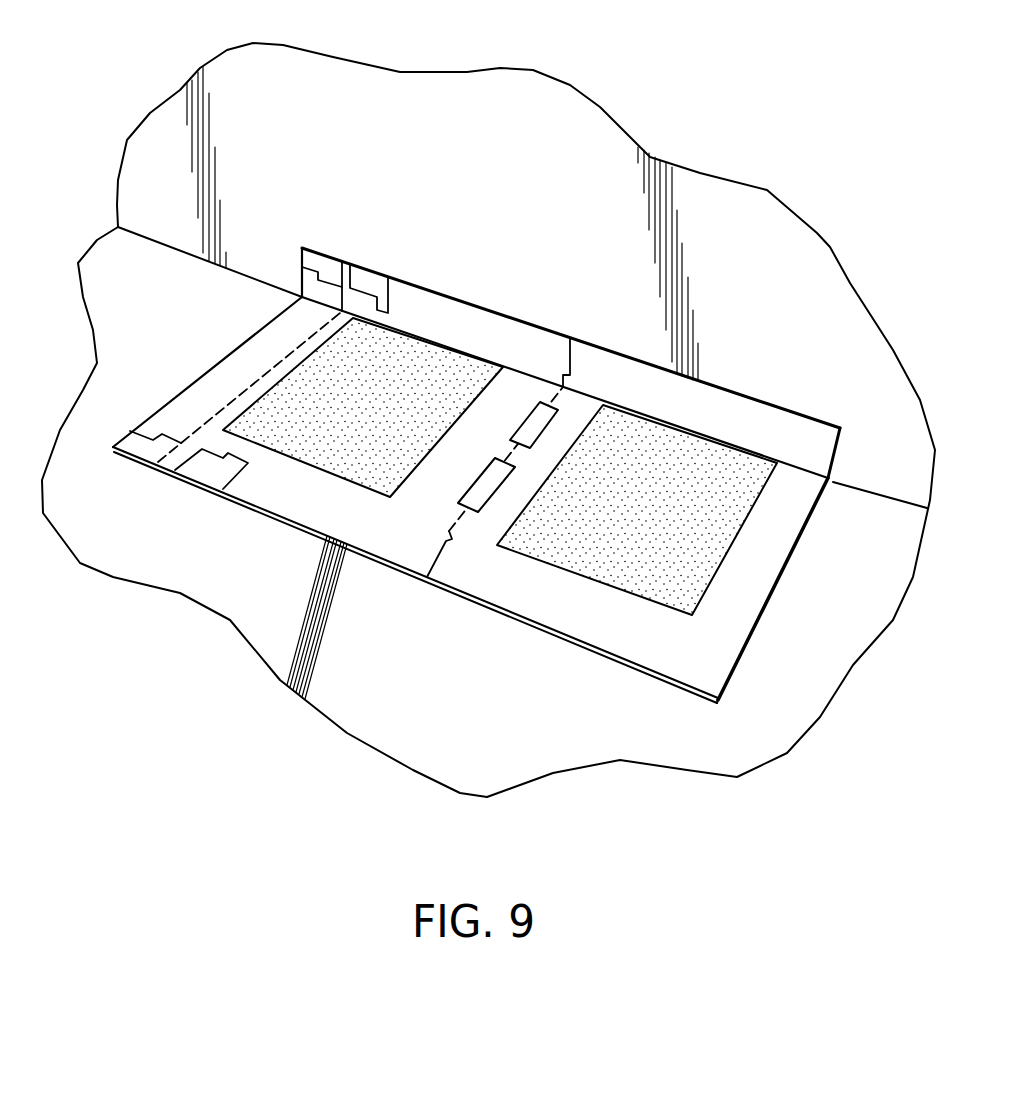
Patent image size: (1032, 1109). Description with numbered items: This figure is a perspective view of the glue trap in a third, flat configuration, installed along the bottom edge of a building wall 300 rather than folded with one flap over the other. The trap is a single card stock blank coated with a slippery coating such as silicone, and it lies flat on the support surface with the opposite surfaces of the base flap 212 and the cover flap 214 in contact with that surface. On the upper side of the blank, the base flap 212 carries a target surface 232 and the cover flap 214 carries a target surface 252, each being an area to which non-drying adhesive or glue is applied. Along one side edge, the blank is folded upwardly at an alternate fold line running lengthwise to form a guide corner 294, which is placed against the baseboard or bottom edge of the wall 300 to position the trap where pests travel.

The building wall 300 is at (175, 123).
The base flap 212 is at (718, 648).
The guide corner 294 is at (832, 481).
The cover flap 214 is at (290, 503).
The target surface 252 is at (285, 410).
The target surface 232 is at (697, 552).